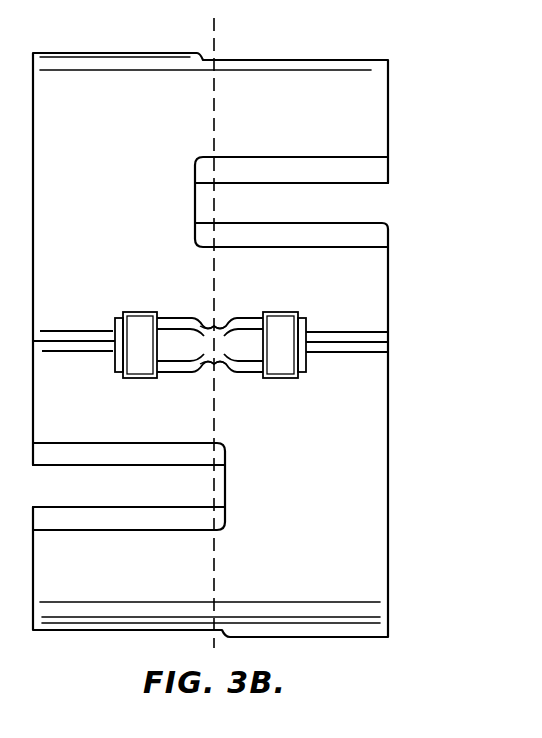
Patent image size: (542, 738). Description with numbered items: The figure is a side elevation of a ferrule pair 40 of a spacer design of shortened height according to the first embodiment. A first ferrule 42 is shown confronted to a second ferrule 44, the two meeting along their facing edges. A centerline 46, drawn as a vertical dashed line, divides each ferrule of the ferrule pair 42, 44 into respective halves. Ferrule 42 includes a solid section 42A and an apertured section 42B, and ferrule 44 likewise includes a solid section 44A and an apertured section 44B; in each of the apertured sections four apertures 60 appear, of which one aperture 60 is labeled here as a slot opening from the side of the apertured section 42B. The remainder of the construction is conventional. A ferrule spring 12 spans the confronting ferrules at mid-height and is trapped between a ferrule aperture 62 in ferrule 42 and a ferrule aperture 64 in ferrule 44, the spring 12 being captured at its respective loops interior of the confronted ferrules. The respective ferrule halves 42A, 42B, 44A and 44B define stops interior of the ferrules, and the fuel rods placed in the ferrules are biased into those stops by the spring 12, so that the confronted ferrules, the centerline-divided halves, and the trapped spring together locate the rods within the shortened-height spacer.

The ferrule spring 12 is at (278, 349).
The ferrule pair 40 is at (256, 353).
The ferrule 42 is at (229, 248).
The solid section 42A is at (143, 142).
The apertured section 42B is at (338, 123).
The ferrule 44 is at (210, 507).
The solid section 44A is at (335, 572).
The apertured section 44B is at (150, 590).
The centerline 46 is at (216, 35).
The aperture 60 is at (371, 168).
The ferrule aperture 62 is at (214, 322).
The ferrule aperture 64 is at (224, 368).